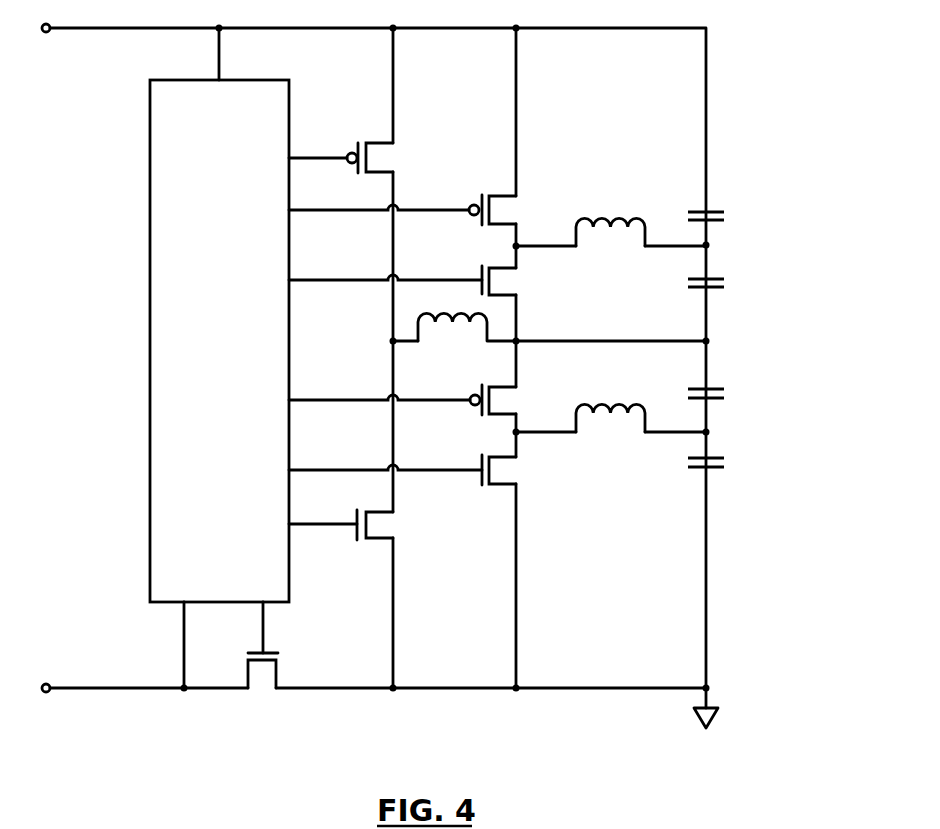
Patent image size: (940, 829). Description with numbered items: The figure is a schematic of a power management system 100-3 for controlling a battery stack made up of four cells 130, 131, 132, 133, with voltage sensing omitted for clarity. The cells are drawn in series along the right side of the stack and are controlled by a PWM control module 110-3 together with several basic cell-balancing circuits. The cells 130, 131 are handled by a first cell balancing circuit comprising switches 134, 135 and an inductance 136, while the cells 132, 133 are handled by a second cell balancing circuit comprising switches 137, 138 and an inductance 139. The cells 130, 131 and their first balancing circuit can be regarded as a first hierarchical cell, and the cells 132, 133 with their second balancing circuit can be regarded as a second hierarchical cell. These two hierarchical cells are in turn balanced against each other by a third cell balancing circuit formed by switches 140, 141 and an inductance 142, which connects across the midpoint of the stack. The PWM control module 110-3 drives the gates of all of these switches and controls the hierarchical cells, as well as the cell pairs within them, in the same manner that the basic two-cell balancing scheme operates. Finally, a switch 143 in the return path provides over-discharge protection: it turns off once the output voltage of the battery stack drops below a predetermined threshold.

The power management system 100-3 is at (846, 97).
The PWM control module 110-3 is at (150, 340).
The cell 130 is at (722, 212).
The cell 131 is at (722, 279).
The cell 132 is at (722, 389).
The cell 133 is at (722, 458).
The switch 134 is at (516, 188).
The switch 135 is at (516, 308).
The inductance 136 is at (606, 218).
The switch 137 is at (516, 378).
The switch 138 is at (516, 498).
The inductance 139 is at (606, 405).
The switch 140 is at (393, 130).
The switch 141 is at (393, 550).
The inductance 142 is at (428, 318).
The switch 143 is at (276, 674).